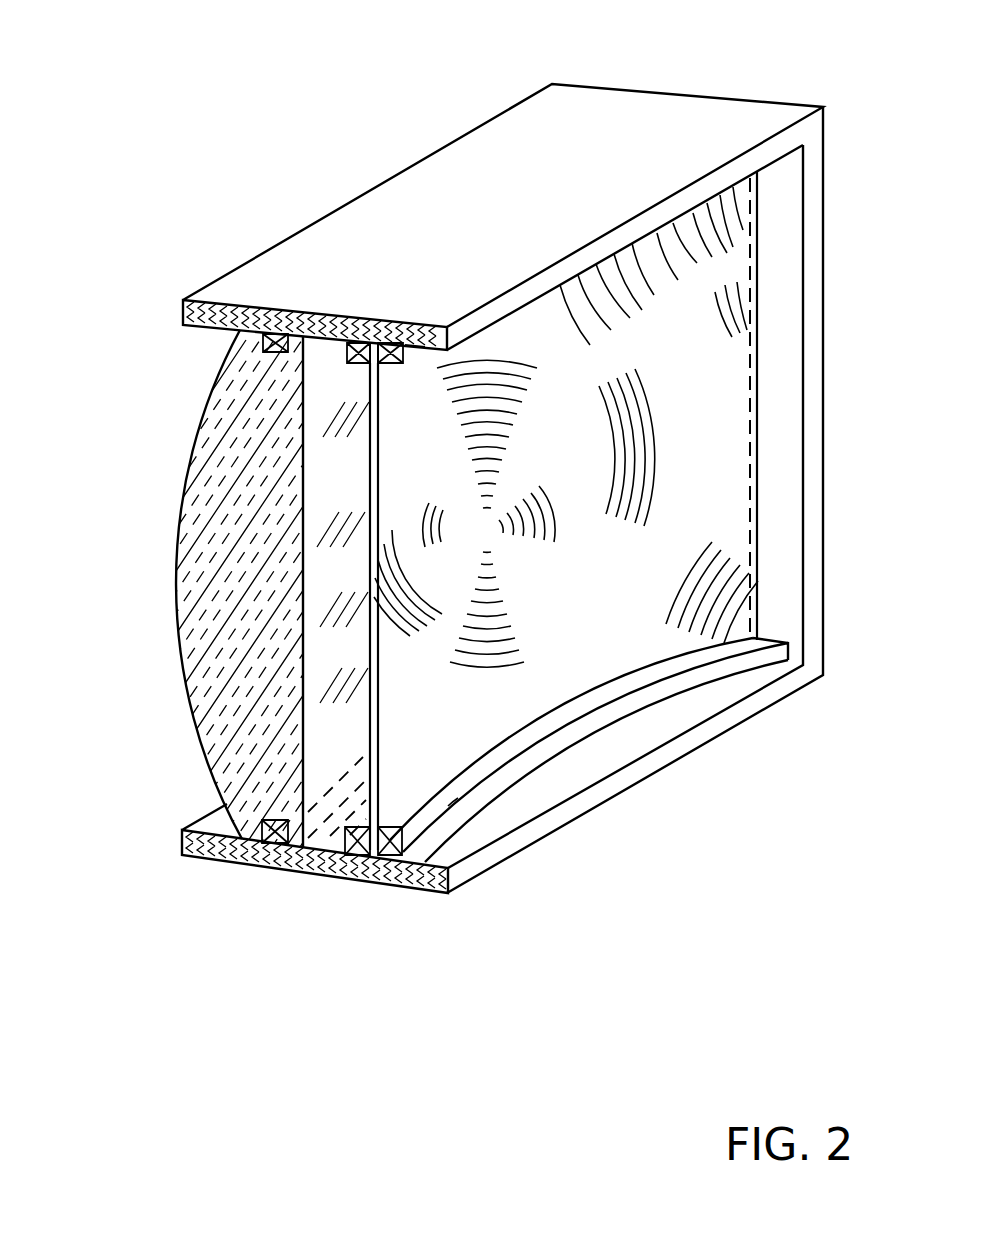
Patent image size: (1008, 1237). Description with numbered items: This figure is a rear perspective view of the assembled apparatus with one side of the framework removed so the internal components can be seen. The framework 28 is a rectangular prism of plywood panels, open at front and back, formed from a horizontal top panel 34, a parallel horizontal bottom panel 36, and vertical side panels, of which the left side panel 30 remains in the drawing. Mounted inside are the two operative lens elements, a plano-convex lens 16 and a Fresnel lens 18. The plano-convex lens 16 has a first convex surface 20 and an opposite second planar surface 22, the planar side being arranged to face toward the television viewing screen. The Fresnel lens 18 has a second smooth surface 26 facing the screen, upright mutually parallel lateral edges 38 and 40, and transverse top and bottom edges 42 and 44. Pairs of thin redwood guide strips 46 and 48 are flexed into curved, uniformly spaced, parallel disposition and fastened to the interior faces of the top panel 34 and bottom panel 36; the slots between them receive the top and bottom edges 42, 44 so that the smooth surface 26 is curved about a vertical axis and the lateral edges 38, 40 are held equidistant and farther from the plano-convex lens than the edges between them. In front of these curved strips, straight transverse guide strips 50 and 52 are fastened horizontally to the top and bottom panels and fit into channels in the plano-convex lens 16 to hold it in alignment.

The plano-convex lens 16 is at (237, 497).
The Fresnel lens 18 is at (567, 577).
The first convex surface 20 is at (328, 600).
The second planar surface 22 is at (180, 576).
The second smooth surface 26 is at (715, 484).
The framework 28 is at (693, 93).
The left side panel 30 is at (788, 232).
The top panel 34 is at (478, 157).
The bottom panel 36 is at (727, 716).
The lateral edge 38 is at (760, 378).
The lateral edge 40 is at (378, 435).
The top edge 42 is at (385, 333).
The bottom edge 44 is at (370, 857).
The guide strips 46 is at (415, 327).
The guide strips 48 is at (313, 320).
The straight transverse guide strip 50 is at (278, 320).
The straight transverse guide strip 52 is at (267, 868).